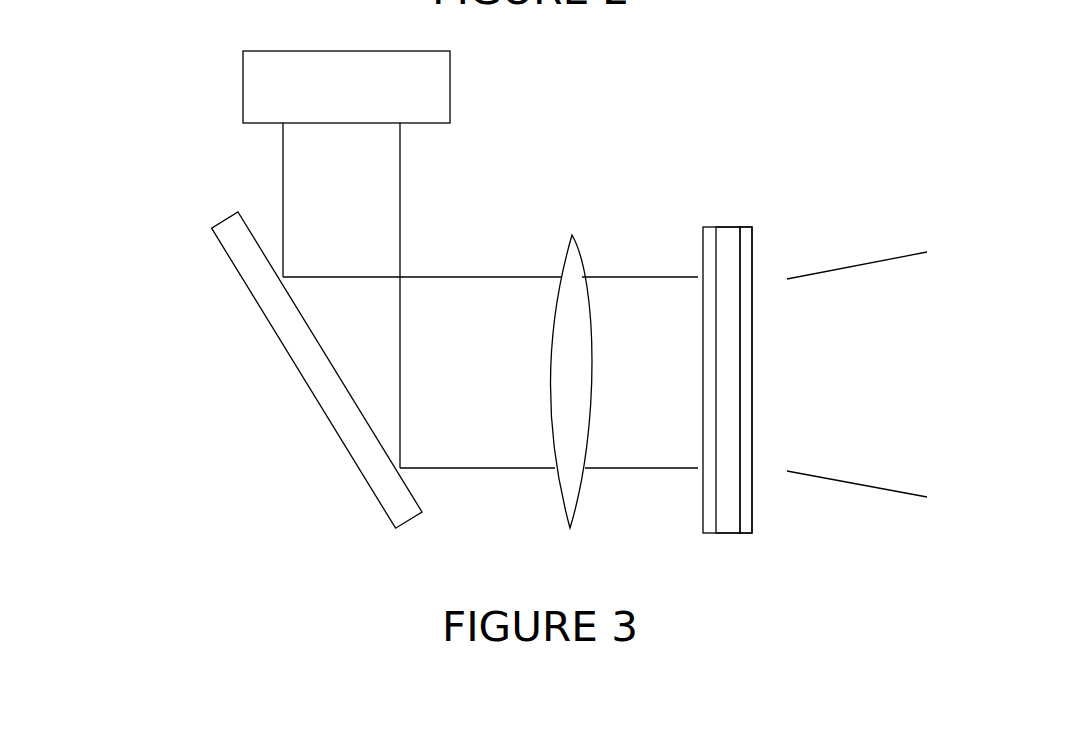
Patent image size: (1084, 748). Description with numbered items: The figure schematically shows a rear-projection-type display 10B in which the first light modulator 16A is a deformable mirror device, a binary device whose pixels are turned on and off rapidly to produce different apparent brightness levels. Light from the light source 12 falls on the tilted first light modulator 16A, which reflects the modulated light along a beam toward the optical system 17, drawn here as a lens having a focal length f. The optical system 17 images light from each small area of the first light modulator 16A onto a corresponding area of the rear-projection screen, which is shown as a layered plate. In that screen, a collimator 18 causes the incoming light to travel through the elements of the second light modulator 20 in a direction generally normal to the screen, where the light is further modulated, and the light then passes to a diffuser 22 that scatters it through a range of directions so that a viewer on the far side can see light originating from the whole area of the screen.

The display 10B is at (188, 43).
The light source 12 is at (441, 51).
The first light modulator 16A is at (223, 219).
The optical system 17 is at (572, 235).
The collimator 18 is at (708, 533).
The second light modulator 20 is at (729, 227).
The diffuser 22 is at (745, 227).